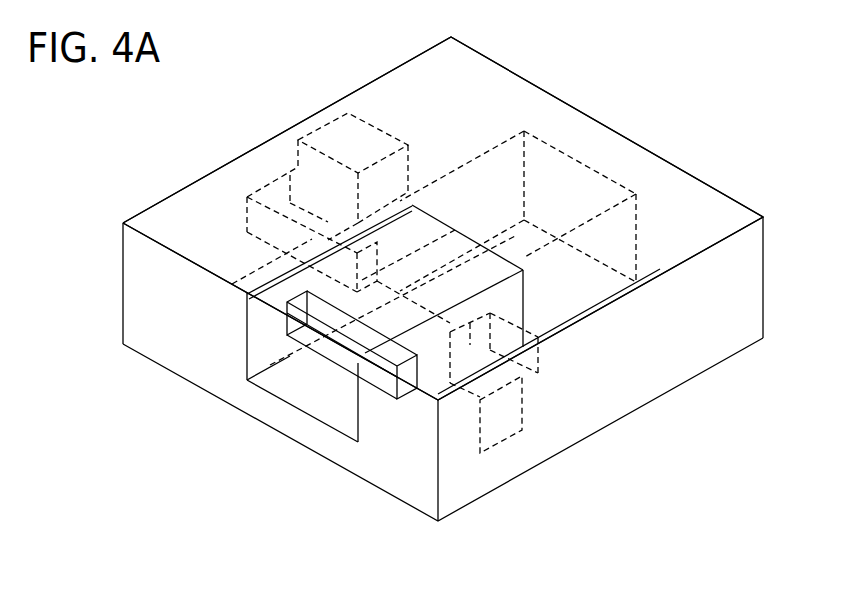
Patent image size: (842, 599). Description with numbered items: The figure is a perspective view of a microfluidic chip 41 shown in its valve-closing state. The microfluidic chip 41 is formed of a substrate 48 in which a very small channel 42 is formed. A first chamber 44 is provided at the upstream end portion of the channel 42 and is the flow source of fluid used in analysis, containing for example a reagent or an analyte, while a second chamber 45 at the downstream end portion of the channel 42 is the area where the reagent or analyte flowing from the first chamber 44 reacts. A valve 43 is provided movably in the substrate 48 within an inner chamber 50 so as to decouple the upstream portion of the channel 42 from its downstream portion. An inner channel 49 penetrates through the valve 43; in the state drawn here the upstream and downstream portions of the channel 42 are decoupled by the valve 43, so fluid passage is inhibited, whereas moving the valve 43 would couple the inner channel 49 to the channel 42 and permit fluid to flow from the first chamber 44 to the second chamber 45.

The microfluidic chip 41 is at (685, 141).
The channel 42 is at (270, 200).
The valve 43 is at (290, 378).
The first chamber 44 is at (500, 434).
The second chamber 45 is at (340, 140).
The substrate 48 is at (508, 93).
The inner channel 49 is at (353, 387).
The inner chamber 50 is at (570, 150).